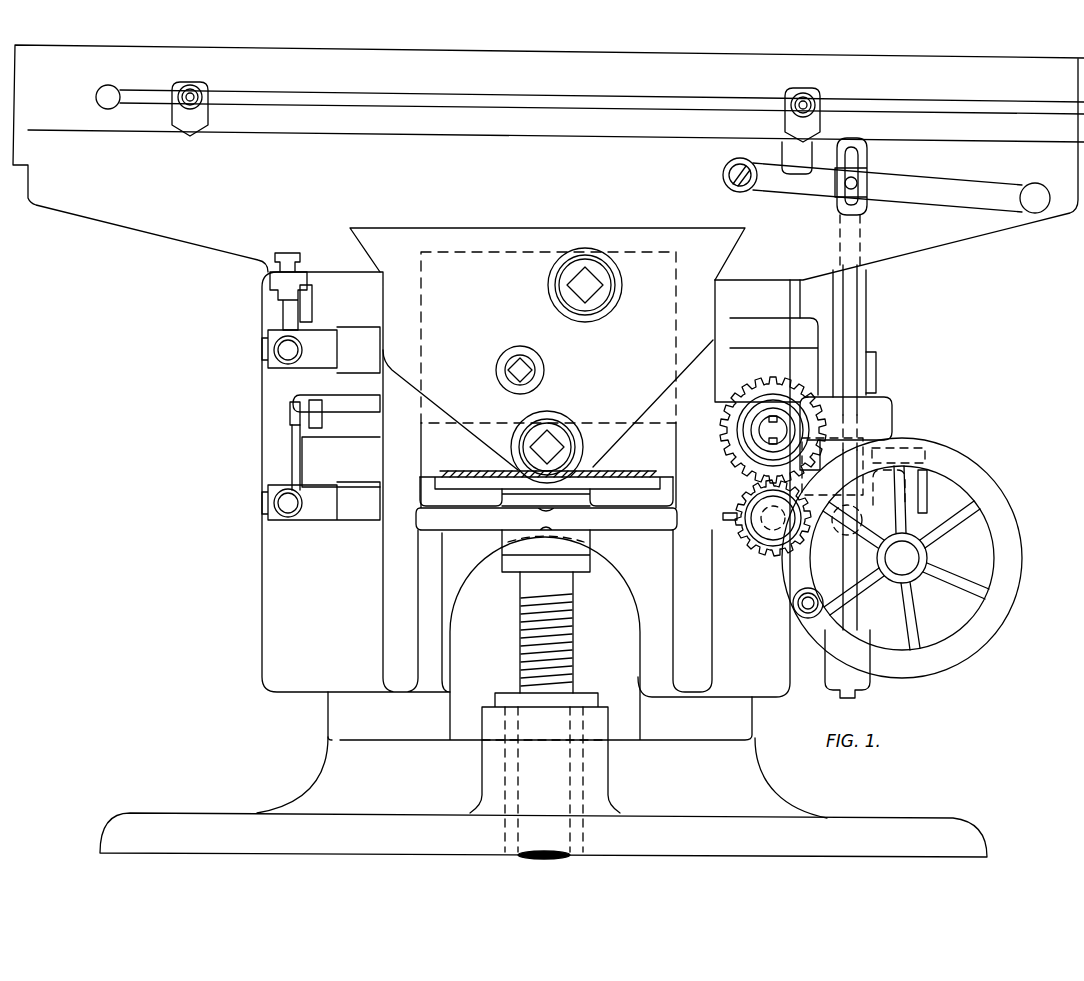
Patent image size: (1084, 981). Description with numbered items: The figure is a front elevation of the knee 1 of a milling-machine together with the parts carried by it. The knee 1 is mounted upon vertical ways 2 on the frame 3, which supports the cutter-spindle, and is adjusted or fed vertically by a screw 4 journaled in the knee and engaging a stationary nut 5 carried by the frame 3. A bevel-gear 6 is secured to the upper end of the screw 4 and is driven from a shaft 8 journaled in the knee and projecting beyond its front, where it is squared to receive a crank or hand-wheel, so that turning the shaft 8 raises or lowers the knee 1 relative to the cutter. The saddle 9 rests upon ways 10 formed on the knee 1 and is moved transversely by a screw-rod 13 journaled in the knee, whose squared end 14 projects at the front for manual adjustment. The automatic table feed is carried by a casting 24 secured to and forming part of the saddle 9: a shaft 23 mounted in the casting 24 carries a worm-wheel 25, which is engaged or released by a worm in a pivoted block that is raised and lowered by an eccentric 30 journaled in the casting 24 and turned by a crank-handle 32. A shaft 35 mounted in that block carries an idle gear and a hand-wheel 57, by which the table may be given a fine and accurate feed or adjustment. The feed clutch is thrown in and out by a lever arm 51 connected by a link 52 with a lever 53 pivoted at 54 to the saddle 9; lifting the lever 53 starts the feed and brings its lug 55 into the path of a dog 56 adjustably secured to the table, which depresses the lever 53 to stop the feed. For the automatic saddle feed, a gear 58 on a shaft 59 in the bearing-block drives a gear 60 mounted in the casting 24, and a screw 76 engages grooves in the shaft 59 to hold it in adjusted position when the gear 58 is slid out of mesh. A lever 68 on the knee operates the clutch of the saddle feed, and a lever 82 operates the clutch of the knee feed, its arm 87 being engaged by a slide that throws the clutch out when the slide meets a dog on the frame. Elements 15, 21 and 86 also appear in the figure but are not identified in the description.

The knee 1 is at (268, 605).
The vertical ways 2 is at (740, 712).
The frame 3 is at (762, 772).
The screw 4 is at (565, 644).
The stationary nut 5 is at (582, 703).
The bevel-gear 6 is at (626, 484).
The shaft 8 is at (562, 438).
The saddle 9 is at (175, 237).
The ways 10 is at (375, 233).
The screw-rod 13 is at (600, 296).
The squared end 14 is at (580, 290).
The guide rail 15 is at (624, 44).
The shaft 21 is at (530, 373).
The shaft 23 is at (878, 373).
The casting 24 is at (790, 330).
The worm-wheel 25 is at (867, 335).
The eccentric 30 is at (862, 451).
The crank-handle 32 is at (927, 493).
The shaft 35 is at (920, 557).
The arm 51 is at (866, 682).
The link 52 is at (850, 312).
The lever 53 is at (937, 198).
The pivot 54 is at (731, 184).
The lug 55 is at (783, 150).
The dog 56 is at (208, 119).
The hand-wheel 57 is at (1008, 566).
The gear 58 is at (760, 548).
The shaft 59 is at (770, 520).
The gear 60 is at (731, 458).
The lever 68 is at (292, 350).
The screw 76 is at (729, 514).
The lever 82 is at (288, 517).
The bracket 86 is at (316, 416).
The arm 87 is at (300, 468).